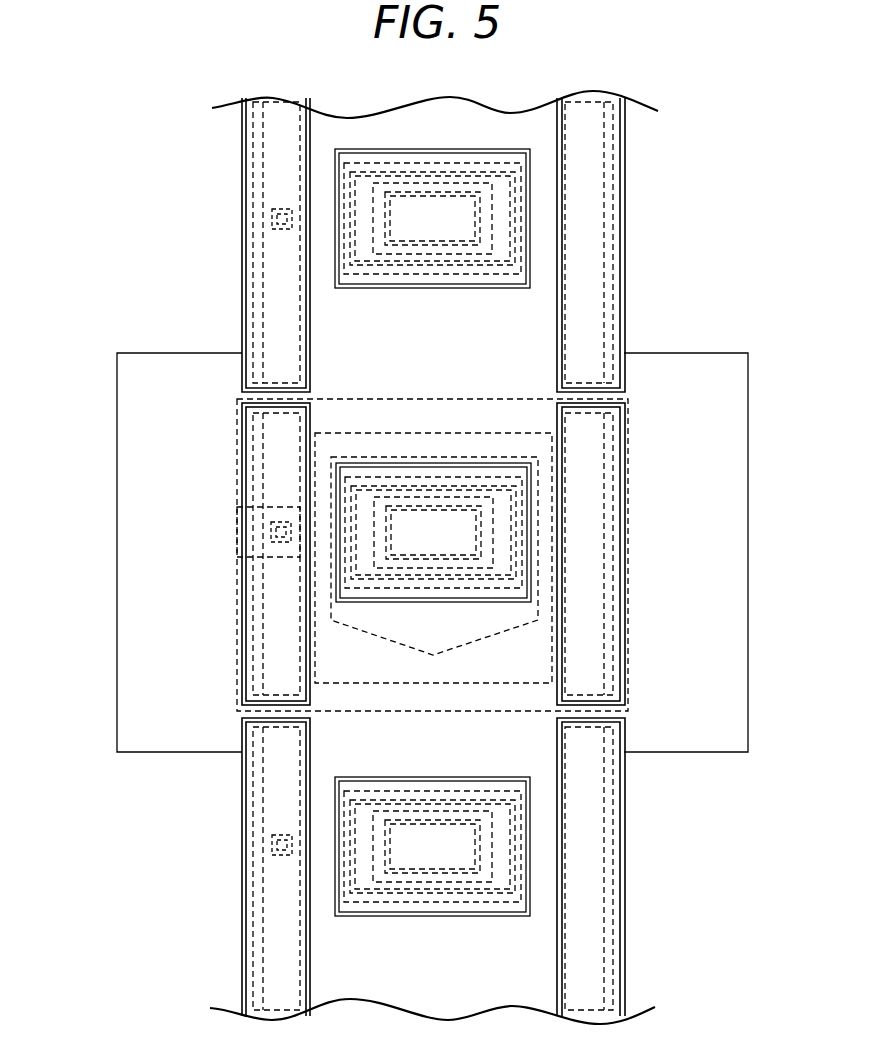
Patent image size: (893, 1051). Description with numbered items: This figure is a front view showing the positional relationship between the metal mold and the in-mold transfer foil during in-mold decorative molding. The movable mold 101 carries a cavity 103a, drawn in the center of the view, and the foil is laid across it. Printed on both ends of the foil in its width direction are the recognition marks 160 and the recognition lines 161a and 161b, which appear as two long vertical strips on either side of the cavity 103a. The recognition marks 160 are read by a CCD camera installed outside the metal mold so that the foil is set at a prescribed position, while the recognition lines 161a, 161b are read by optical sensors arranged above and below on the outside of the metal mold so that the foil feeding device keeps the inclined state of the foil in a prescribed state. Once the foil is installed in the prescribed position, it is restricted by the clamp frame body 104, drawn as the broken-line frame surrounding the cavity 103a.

The movable mold 101 is at (147, 593).
The cavity 103a is at (328, 468).
The clamp frame body 104 is at (535, 415).
The recognition mark 160 is at (237, 528).
The recognition line 161a is at (275, 169).
The recognition line 161b is at (590, 170).